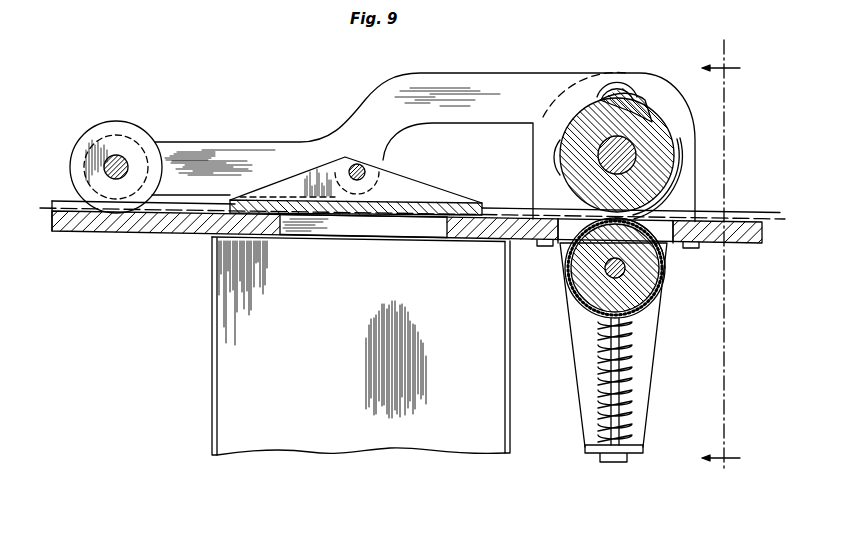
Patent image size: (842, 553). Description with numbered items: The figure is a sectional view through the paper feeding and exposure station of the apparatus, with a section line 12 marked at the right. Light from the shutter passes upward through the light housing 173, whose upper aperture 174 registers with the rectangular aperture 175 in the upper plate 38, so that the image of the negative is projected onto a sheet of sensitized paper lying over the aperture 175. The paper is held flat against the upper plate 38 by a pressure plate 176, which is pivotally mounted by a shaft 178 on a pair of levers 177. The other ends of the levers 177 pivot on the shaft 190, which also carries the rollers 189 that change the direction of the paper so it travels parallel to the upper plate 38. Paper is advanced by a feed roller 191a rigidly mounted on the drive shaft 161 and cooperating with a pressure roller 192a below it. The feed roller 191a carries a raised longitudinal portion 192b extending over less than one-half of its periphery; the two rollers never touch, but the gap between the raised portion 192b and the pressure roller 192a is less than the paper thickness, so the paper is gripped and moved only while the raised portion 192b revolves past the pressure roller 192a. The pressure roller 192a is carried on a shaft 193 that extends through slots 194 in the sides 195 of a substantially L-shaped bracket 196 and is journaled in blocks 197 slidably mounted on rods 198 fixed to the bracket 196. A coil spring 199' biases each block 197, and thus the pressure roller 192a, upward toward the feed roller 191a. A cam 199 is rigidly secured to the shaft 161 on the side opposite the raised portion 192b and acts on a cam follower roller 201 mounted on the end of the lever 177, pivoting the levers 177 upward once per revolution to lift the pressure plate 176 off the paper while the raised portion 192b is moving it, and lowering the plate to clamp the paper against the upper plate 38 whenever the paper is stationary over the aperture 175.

The section line 12- 12 is at (732, 257).
The upper plate 38 is at (140, 234).
The drive shaft 161 is at (603, 168).
The light housing 173 is at (212, 350).
The upper aperture 174 is at (345, 238).
The rectangular aperture 175 is at (420, 233).
The pressure plate 176 is at (412, 203).
The levers 177 is at (358, 108).
The shaft 178 is at (358, 164).
The rollers 189 is at (92, 142).
The shaft 190 is at (120, 160).
The feed roller 191a is at (645, 120).
The pressure roller 192a is at (660, 276).
The raised longitudinal portion 192b is at (556, 150).
The shaft 193 is at (605, 276).
The slots 194 is at (568, 268).
The sides 195 is at (664, 318).
The L-shaped bracket 196 is at (652, 418).
The blocks 197 is at (662, 292).
The rods 198 is at (628, 343).
The cam 199 is at (681, 178).
The coil springs 199' is at (647, 382).
The cam follower roller 201 is at (620, 76).